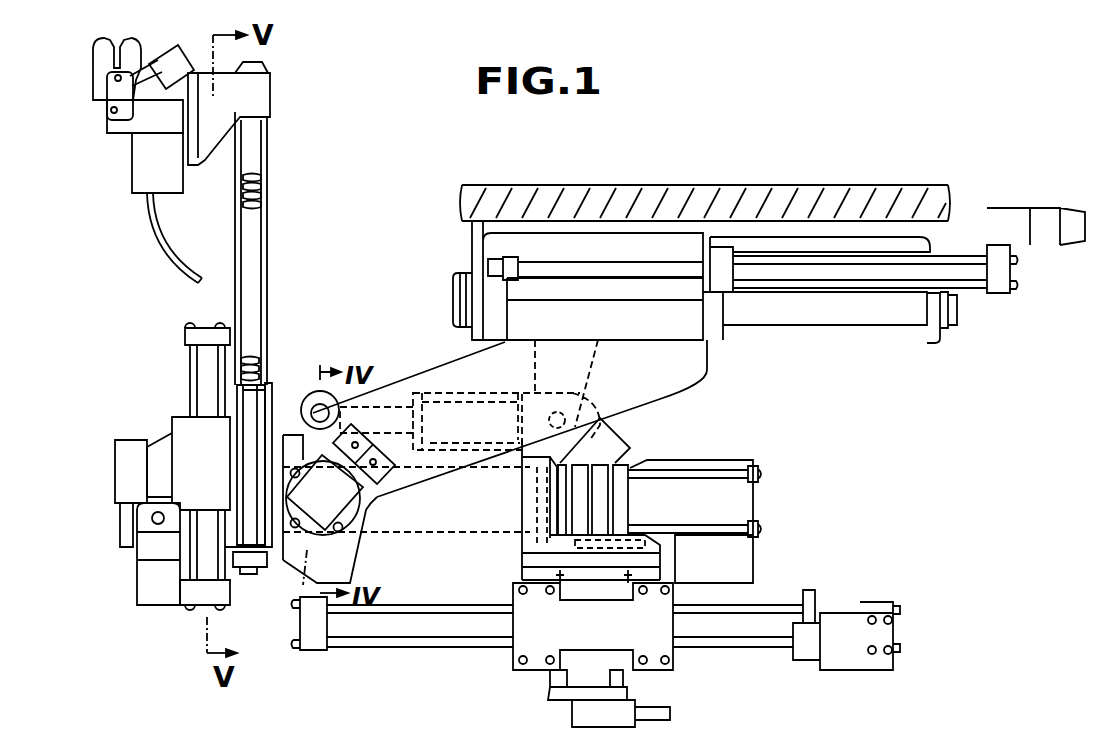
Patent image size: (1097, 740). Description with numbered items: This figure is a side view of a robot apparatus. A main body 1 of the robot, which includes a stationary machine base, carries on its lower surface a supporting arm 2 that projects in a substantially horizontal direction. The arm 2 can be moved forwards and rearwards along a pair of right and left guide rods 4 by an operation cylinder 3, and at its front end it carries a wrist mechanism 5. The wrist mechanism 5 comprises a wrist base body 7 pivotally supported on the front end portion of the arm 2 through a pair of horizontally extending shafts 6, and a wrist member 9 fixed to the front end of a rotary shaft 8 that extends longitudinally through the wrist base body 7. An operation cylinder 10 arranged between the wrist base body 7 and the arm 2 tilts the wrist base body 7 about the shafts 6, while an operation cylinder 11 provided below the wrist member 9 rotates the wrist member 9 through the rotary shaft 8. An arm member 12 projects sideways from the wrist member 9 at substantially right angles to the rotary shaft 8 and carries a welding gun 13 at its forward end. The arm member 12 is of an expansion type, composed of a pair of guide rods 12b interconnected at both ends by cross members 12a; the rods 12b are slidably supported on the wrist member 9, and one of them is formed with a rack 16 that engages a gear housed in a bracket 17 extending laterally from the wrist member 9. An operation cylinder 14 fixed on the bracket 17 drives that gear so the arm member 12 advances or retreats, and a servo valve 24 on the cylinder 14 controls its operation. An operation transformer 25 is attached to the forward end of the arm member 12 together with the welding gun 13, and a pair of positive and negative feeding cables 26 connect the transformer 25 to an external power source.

The main body 1 is at (640, 220).
The supporting arm 2 is at (442, 372).
The operation cylinder 3 is at (833, 273).
The guide rods 4 is at (880, 317).
The wrist mechanism 5 is at (381, 369).
The shafts 6 is at (296, 433).
The wrist base body 7 is at (430, 543).
The rotary shaft 8 is at (402, 525).
The wrist member 9 is at (274, 383).
The operation cylinder 10 is at (440, 378).
The operation cylinder 11 is at (720, 637).
The arm member 12 is at (275, 240).
The cross members 12a is at (270, 96).
The guide rods 12b is at (268, 163).
The welding gun 13 is at (97, 64).
The operation cylinder 14 is at (203, 368).
The rack 16 is at (267, 193).
The bracket 17 is at (250, 452).
The servo valve 24 is at (155, 577).
The operation transformer 25 is at (140, 160).
The feeding cables 26 is at (168, 251).